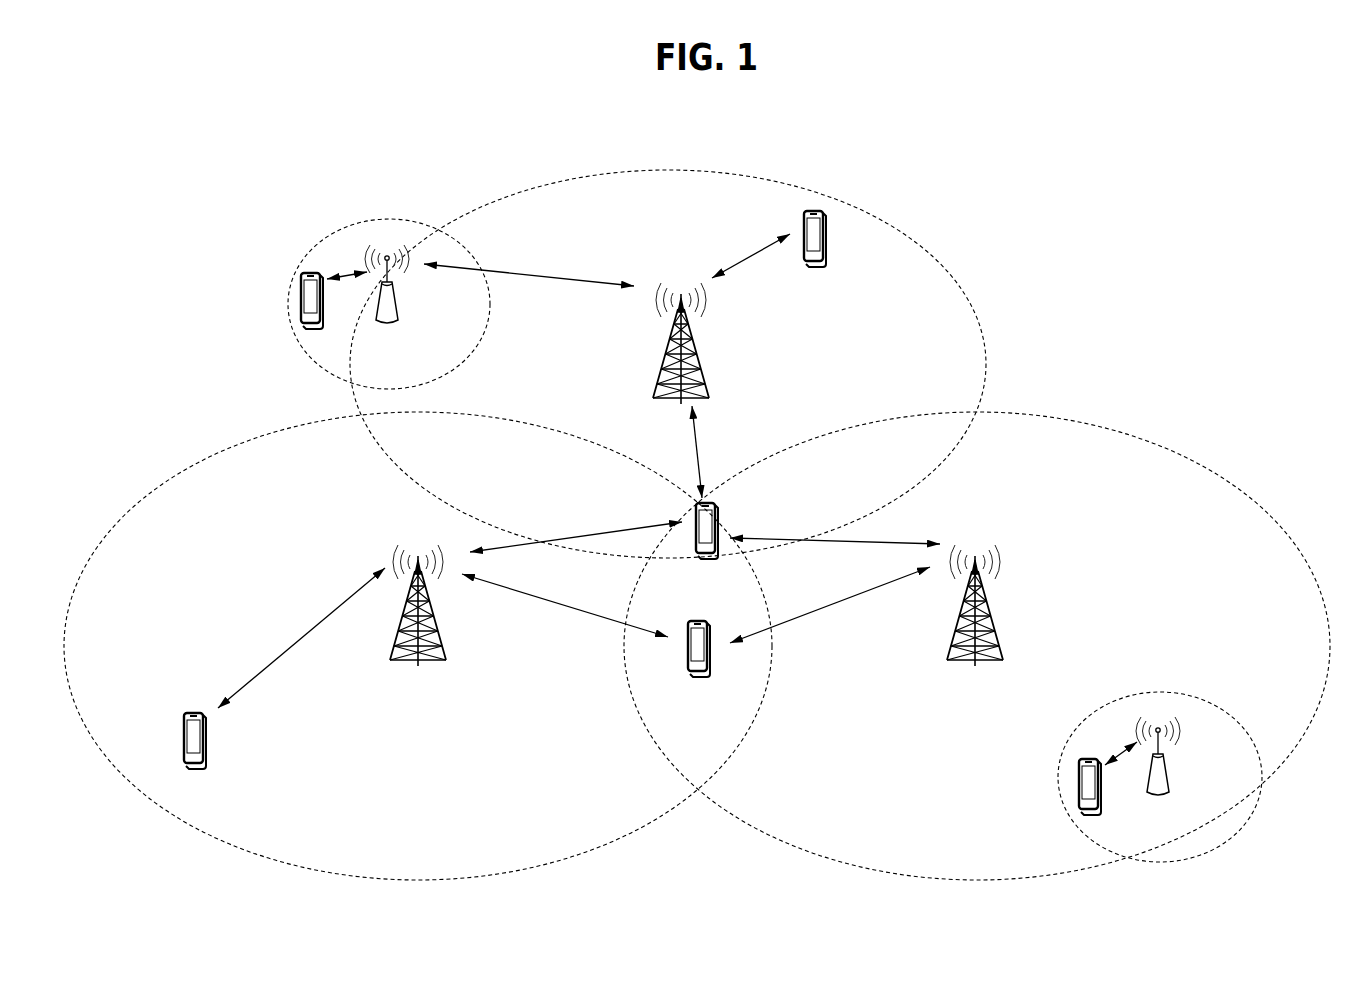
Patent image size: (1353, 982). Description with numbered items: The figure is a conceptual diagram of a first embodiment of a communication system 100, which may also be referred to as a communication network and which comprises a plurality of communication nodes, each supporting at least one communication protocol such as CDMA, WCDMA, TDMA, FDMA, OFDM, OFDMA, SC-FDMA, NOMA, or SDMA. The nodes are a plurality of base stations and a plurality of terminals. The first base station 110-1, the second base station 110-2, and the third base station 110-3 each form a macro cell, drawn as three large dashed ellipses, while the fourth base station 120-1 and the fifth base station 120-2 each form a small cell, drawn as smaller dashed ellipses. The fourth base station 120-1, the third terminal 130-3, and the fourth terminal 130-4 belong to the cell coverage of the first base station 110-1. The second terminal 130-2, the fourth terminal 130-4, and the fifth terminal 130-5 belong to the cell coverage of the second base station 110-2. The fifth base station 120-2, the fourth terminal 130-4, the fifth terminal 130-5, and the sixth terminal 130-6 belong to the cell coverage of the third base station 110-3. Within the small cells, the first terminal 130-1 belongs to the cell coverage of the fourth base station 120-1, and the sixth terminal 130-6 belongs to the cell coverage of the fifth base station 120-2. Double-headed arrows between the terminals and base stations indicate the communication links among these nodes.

The communication system 100 is at (688, 136).
The first base station 110-1 is at (700, 345).
The second base station 110-2 is at (418, 666).
The third base station 110-3 is at (993, 608).
The fourth base station 120-1 is at (398, 306).
The fifth base station 120-2 is at (1168, 772).
The first terminal 130-1 is at (300, 295).
The second terminal 130-2 is at (208, 742).
The third terminal 130-3 is at (828, 250).
The fourth terminal 130-4 is at (718, 506).
The fifth terminal 130-5 is at (702, 622).
The sixth terminal 130-6 is at (1078, 785).